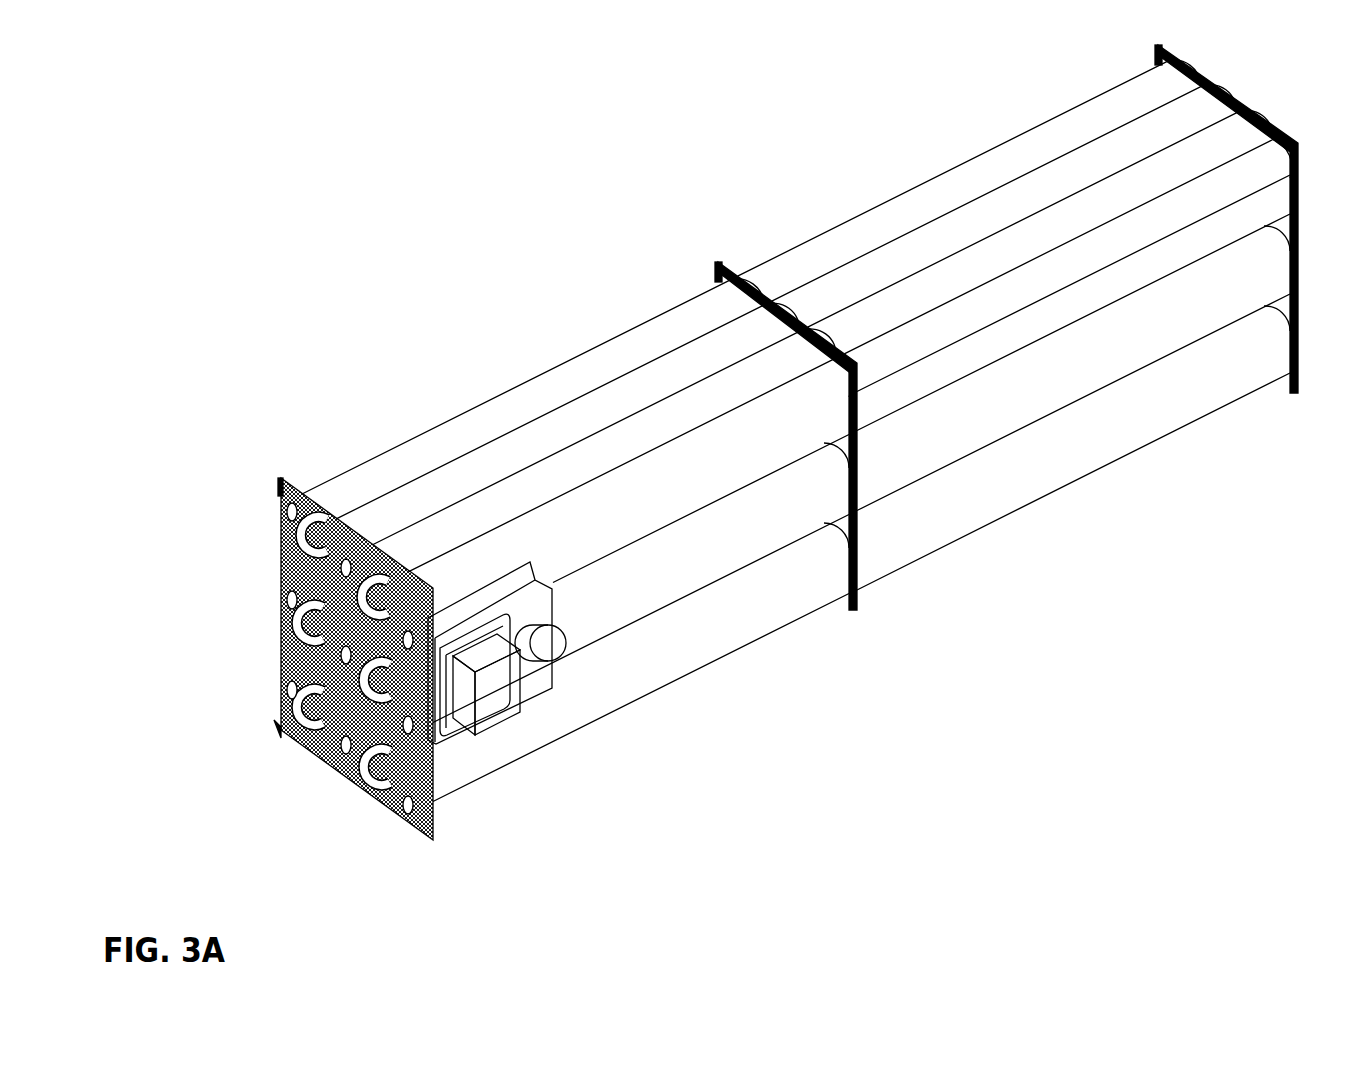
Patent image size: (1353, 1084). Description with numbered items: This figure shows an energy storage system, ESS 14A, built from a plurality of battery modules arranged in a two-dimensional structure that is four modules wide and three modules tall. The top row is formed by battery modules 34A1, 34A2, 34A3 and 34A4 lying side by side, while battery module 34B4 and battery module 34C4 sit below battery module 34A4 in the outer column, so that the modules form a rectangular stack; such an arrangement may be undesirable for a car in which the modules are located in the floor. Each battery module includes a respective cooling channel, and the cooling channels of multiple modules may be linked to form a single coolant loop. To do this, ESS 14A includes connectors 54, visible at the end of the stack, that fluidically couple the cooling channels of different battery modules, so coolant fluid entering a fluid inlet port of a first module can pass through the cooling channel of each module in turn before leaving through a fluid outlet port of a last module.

The ESS 14A is at (597, 141).
The battery module 34A1 is at (639, 345).
The battery module 34A2 is at (603, 408).
The battery module 34A3 is at (570, 468).
The battery module 34A4 is at (567, 517).
The battery module 34B4 is at (970, 437).
The battery module 34C4 is at (1007, 498).
The connectors 54 is at (283, 534).